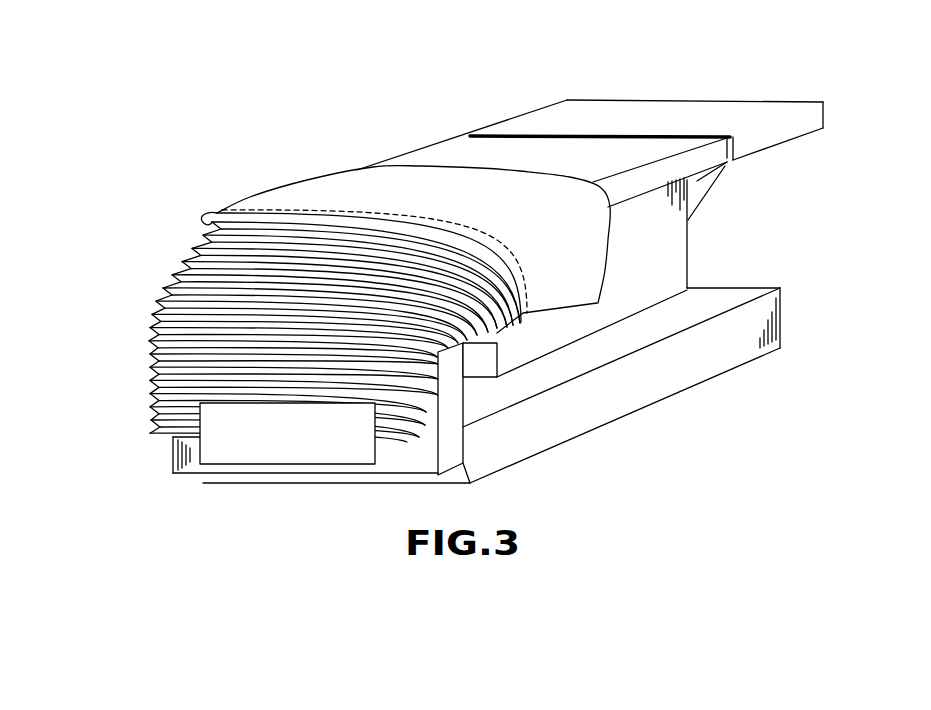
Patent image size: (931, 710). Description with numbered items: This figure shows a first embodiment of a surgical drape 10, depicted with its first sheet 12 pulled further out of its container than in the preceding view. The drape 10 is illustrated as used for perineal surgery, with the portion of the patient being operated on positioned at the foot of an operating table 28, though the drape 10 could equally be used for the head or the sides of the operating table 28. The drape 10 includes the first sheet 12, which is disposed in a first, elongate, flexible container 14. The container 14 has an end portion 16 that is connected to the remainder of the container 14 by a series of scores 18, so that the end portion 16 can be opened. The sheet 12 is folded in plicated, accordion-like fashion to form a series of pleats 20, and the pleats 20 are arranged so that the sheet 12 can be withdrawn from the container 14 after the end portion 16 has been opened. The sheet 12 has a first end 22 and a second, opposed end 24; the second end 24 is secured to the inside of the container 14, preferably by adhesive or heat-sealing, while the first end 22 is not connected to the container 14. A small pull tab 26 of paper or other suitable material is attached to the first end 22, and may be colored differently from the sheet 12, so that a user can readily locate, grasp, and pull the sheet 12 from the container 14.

The surgical drape 10 is at (265, 146).
The first sheet 12 is at (138, 272).
The first elongate flexible container 14 is at (595, 247).
The end portion 16 is at (543, 300).
The scores 18 is at (547, 323).
The pleats 20 is at (152, 352).
The first end 22 is at (133, 423).
The second end 24 is at (192, 222).
The pull tab 26 is at (280, 450).
The operating table 28 is at (717, 76).